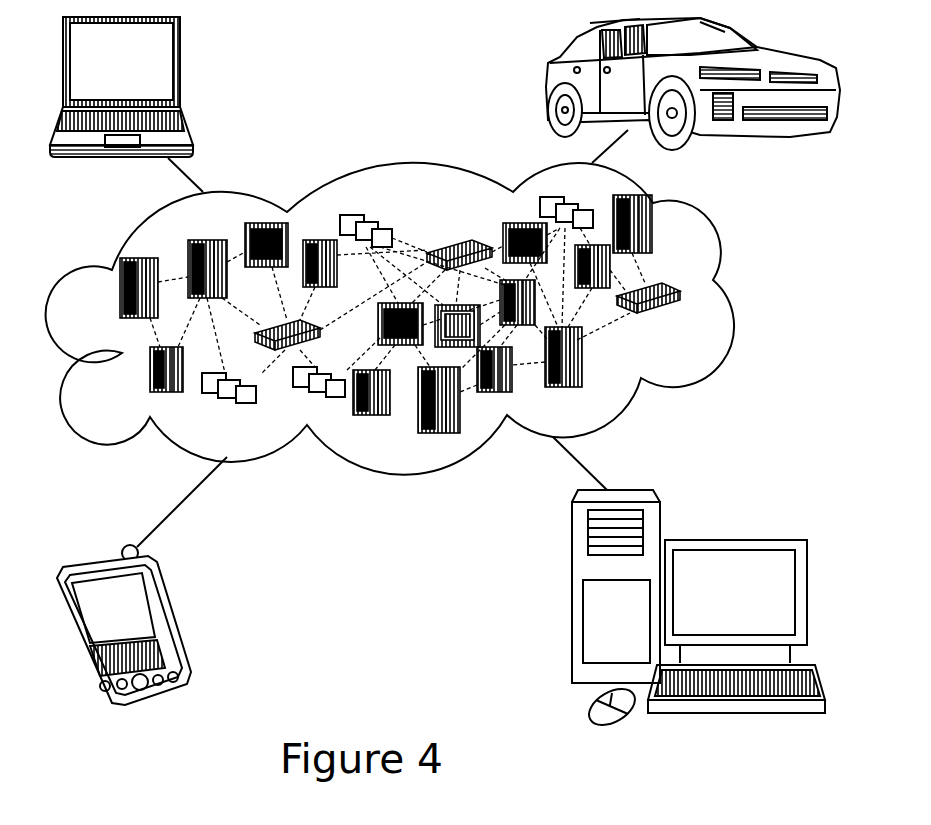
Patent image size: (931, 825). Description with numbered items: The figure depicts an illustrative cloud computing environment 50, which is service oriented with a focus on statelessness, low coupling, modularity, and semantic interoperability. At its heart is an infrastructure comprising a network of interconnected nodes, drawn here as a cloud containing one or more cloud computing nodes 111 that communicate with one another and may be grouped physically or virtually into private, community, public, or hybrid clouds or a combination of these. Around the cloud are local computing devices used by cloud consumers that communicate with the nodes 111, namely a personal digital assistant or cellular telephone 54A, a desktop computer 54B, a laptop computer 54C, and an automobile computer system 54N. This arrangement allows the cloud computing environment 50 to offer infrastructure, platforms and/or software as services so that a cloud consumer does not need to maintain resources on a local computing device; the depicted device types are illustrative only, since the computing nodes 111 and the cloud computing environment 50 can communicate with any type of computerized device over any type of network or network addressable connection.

The cloud computing environment 50 is at (732, 297).
The personal digital assistant (PDA) or cellular telephone 54A is at (182, 614).
The desktop computer 54B is at (733, 540).
The laptop computer 54C is at (180, 70).
The automobile computer system 54N is at (548, 86).
The cloud computing nodes 111 is at (686, 323).